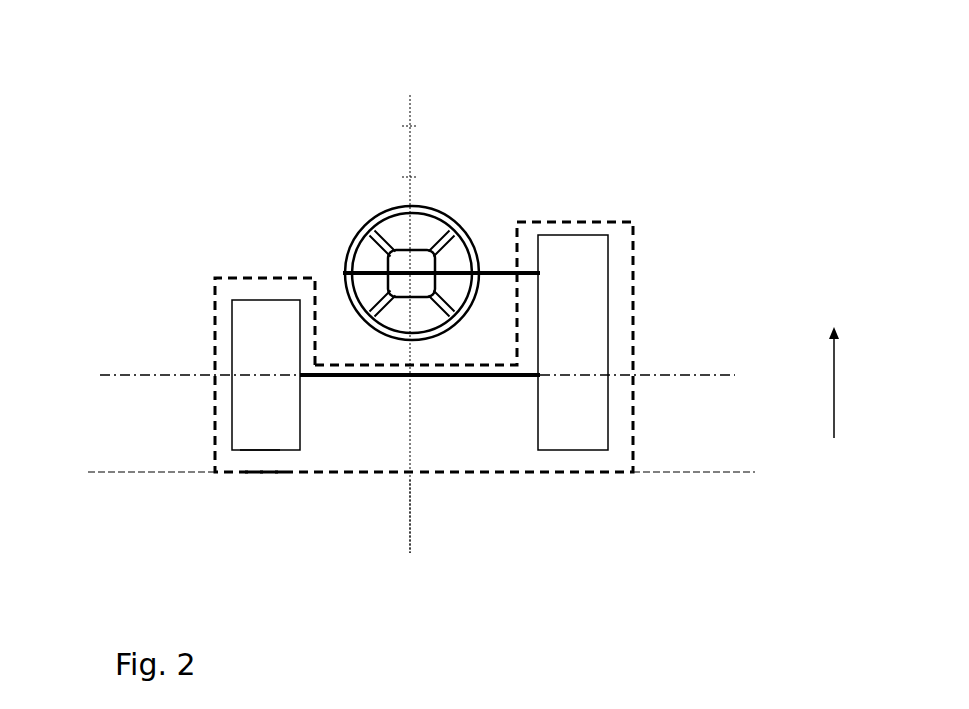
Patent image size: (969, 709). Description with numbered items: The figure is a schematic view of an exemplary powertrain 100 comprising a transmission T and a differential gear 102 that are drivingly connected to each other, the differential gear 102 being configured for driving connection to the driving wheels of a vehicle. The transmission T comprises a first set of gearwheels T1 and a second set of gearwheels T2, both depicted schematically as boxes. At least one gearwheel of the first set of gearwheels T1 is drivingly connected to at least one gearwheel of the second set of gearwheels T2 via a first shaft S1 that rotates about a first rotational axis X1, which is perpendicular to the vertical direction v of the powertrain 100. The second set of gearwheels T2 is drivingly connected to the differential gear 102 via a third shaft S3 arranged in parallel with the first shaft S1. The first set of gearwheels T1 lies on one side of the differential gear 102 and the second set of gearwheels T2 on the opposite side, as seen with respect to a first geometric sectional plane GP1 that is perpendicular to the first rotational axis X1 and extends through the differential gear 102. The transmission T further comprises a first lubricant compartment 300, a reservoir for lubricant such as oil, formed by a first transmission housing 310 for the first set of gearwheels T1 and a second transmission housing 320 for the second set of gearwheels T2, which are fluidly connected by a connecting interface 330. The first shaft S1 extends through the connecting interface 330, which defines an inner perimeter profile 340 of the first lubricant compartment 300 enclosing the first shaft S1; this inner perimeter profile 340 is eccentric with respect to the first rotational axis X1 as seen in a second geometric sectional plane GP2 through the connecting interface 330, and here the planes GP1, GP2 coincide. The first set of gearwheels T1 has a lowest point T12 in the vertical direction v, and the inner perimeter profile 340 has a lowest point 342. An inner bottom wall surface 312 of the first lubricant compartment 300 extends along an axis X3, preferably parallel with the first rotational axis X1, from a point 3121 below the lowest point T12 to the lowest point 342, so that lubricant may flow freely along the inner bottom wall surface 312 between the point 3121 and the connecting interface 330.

The powertrain 100 is at (184, 141).
The differential gear 102 is at (432, 181).
The first geometric sectional plane GP1 is at (410, 126).
The second geometric sectional plane GP2 is at (410, 177).
The third shaft S3 is at (501, 271).
The first lubricant compartment 300 is at (424, 327).
The first transmission housing 310 is at (215, 328).
The second transmission housing 320 is at (633, 258).
The transmission T is at (411, 285).
The first set of gearwheels T1 is at (252, 300).
The second set of gearwheels T2 is at (568, 235).
The lowest point of the first set of gearwheels T12 is at (258, 450).
The point 3121 is at (262, 473).
The inner bottom wall surface 312 is at (352, 447).
The connecting interface 330 is at (404, 483).
The first rotational axis X1 is at (441, 378).
The first shaft S1 is at (440, 378).
The axis X3 is at (442, 478).
The inner perimeter profile 340 is at (491, 519).
The lowest point of the inner perimeter profile 342 is at (424, 448).
The vertical direction v is at (848, 382).